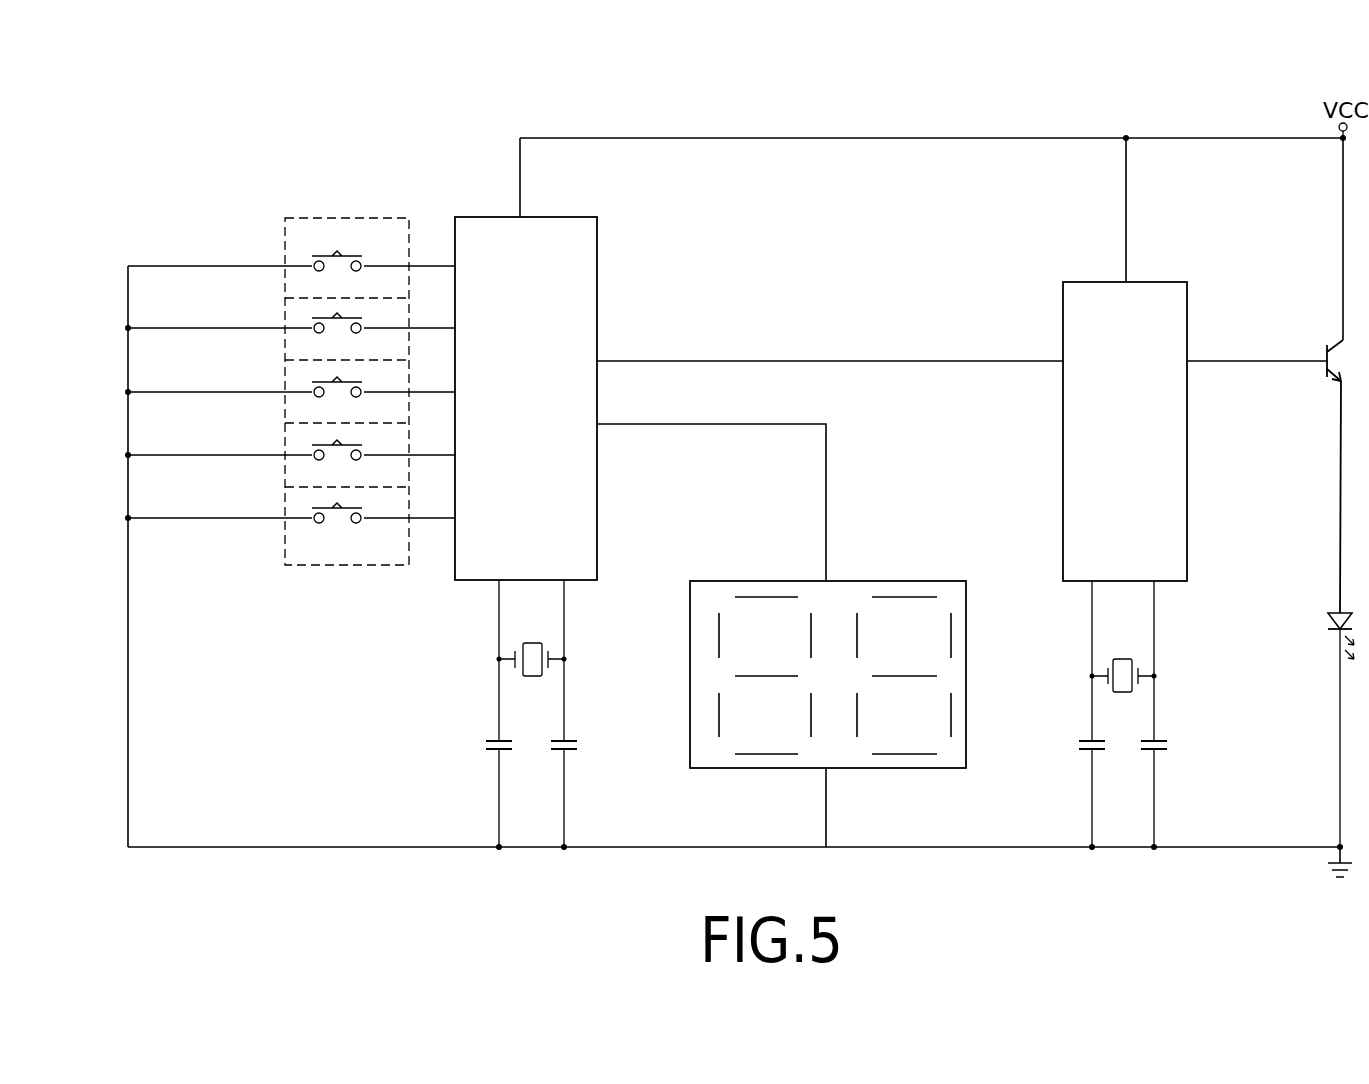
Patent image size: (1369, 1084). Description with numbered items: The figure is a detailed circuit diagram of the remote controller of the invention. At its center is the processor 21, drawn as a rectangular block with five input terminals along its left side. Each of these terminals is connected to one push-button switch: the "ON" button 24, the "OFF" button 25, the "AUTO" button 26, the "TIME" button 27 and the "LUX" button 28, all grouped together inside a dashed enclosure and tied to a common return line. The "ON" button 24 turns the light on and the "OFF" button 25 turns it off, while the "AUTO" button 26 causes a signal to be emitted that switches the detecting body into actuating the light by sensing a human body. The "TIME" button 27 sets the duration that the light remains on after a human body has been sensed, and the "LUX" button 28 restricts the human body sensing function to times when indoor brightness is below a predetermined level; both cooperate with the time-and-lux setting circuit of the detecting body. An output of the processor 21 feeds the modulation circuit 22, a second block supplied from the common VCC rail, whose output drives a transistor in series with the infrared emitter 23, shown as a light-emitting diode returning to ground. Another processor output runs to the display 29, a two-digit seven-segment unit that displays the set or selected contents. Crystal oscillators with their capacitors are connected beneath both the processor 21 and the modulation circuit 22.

The processor 21 is at (597, 493).
The modulation circuit 22 is at (1183, 517).
The infrared emitter 23 is at (1329, 880).
The ON button 24 is at (285, 238).
The OFF button 25 is at (285, 320).
The AUTO button 26 is at (287, 386).
The TIME button 27 is at (292, 446).
The LUX button 28 is at (296, 512).
The display 29 is at (913, 765).